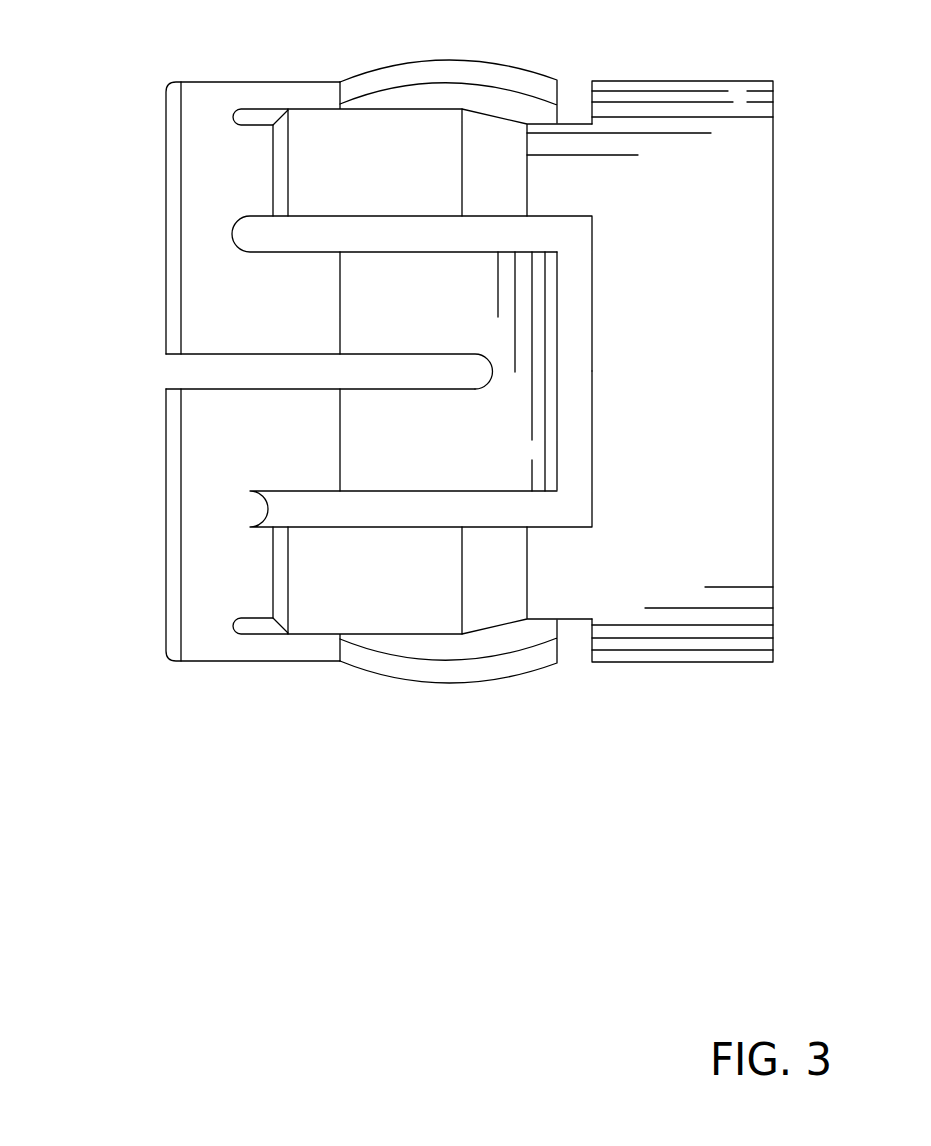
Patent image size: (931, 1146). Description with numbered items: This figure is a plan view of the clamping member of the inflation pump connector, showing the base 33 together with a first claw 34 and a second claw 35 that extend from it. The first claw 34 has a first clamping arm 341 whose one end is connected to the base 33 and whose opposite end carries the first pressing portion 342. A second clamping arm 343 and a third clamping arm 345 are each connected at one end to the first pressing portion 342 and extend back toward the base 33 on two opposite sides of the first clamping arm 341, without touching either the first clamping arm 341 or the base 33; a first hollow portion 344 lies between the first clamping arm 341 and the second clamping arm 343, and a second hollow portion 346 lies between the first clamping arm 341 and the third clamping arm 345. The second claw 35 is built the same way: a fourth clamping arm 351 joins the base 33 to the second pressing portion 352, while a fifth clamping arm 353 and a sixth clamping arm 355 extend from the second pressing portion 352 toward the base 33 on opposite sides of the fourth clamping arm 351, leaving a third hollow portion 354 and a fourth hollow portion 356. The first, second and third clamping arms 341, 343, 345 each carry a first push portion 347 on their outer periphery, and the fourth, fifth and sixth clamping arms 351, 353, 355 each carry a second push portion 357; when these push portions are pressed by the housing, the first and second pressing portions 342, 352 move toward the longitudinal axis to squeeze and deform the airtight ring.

The base 33 is at (736, 112).
The first claw 34 is at (128, 548).
The first clamping arm 341 is at (265, 591).
The first pressing portion 342 is at (193, 579).
The second clamping arm 343 is at (330, 435).
The first hollow portion 344 is at (248, 491).
The third clamping arm 345 is at (323, 645).
The second hollow portion 346 is at (250, 627).
The first push portion 347 is at (422, 457).
The second claw 35 is at (128, 203).
The fourth clamping arm 351 is at (265, 150).
The second pressing portion 352 is at (207, 147).
The fifth clamping arm 353 is at (325, 321).
The third hollow portion 354 is at (248, 252).
The sixth clamping arm 355 is at (317, 97).
The fourth hollow portion 356 is at (250, 120).
The second push portion 357 is at (422, 287).